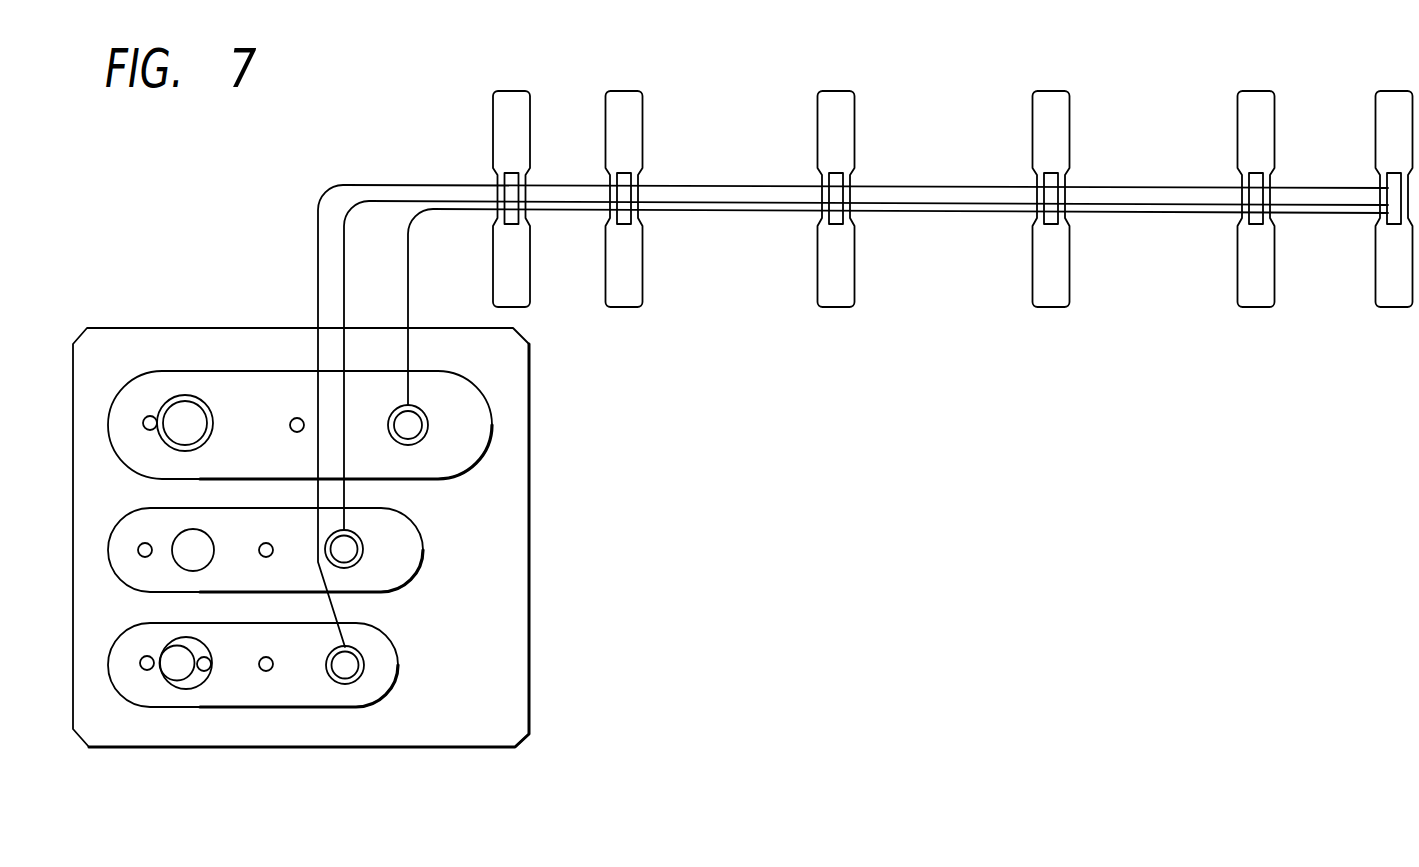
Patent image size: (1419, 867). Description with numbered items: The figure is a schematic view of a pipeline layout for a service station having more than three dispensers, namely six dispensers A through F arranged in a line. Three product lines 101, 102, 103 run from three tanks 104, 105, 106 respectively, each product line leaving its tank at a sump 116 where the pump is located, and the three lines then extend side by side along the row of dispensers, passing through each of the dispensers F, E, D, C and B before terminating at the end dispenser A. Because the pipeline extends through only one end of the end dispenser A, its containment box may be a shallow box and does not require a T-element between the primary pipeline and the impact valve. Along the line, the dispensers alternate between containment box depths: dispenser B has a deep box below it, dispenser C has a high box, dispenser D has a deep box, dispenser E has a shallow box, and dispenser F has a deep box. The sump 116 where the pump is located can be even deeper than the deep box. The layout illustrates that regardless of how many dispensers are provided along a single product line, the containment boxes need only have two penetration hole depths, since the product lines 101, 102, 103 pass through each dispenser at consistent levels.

The product line 101 is at (358, 183).
The product line 102 is at (405, 198).
The product line 103 is at (473, 212).
The tank 104 is at (400, 665).
The tank 105 is at (422, 553).
The tank 106 is at (492, 427).
The sump 116 is at (422, 437).
The end dispenser A is at (1388, 310).
The dispenser B is at (1237, 267).
The dispenser C is at (1072, 263).
The dispenser D is at (857, 260).
The dispenser E is at (643, 265).
The dispenser F is at (532, 275).